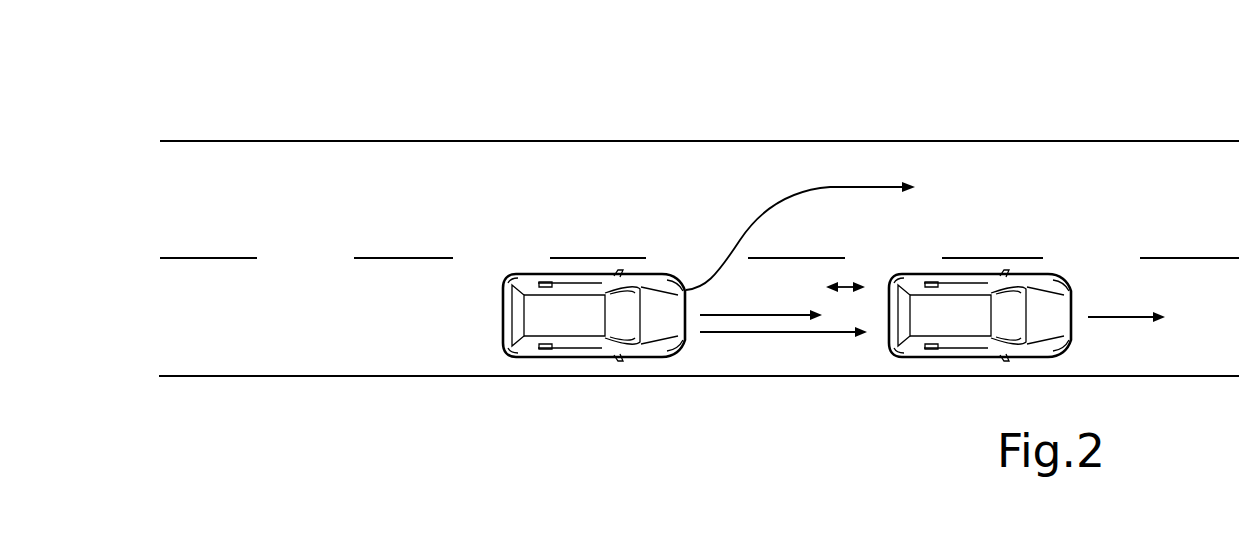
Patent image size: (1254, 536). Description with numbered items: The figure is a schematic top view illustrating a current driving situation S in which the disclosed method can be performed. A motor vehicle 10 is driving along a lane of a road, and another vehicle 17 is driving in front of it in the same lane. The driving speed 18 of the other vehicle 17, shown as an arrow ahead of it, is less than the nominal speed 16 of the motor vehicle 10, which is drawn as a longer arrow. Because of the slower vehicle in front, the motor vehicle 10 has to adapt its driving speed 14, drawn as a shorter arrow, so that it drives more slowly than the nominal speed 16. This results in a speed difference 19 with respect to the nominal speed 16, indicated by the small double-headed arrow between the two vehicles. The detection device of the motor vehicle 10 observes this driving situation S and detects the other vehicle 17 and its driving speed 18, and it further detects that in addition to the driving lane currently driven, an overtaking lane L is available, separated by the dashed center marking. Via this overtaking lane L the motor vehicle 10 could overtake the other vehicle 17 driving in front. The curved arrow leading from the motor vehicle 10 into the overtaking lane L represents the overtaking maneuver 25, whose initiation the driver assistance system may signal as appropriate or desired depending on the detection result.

The driving situation S is at (632, 93).
The overtaking lane L is at (735, 171).
The motor vehicle 10 is at (590, 275).
The driving speed 14 is at (755, 312).
The nominal speed 16 is at (766, 340).
The other vehicle 17 is at (970, 275).
The driving speed 18 is at (1113, 315).
The speed difference 19 is at (845, 284).
The overtaking maneuver 25 is at (872, 186).